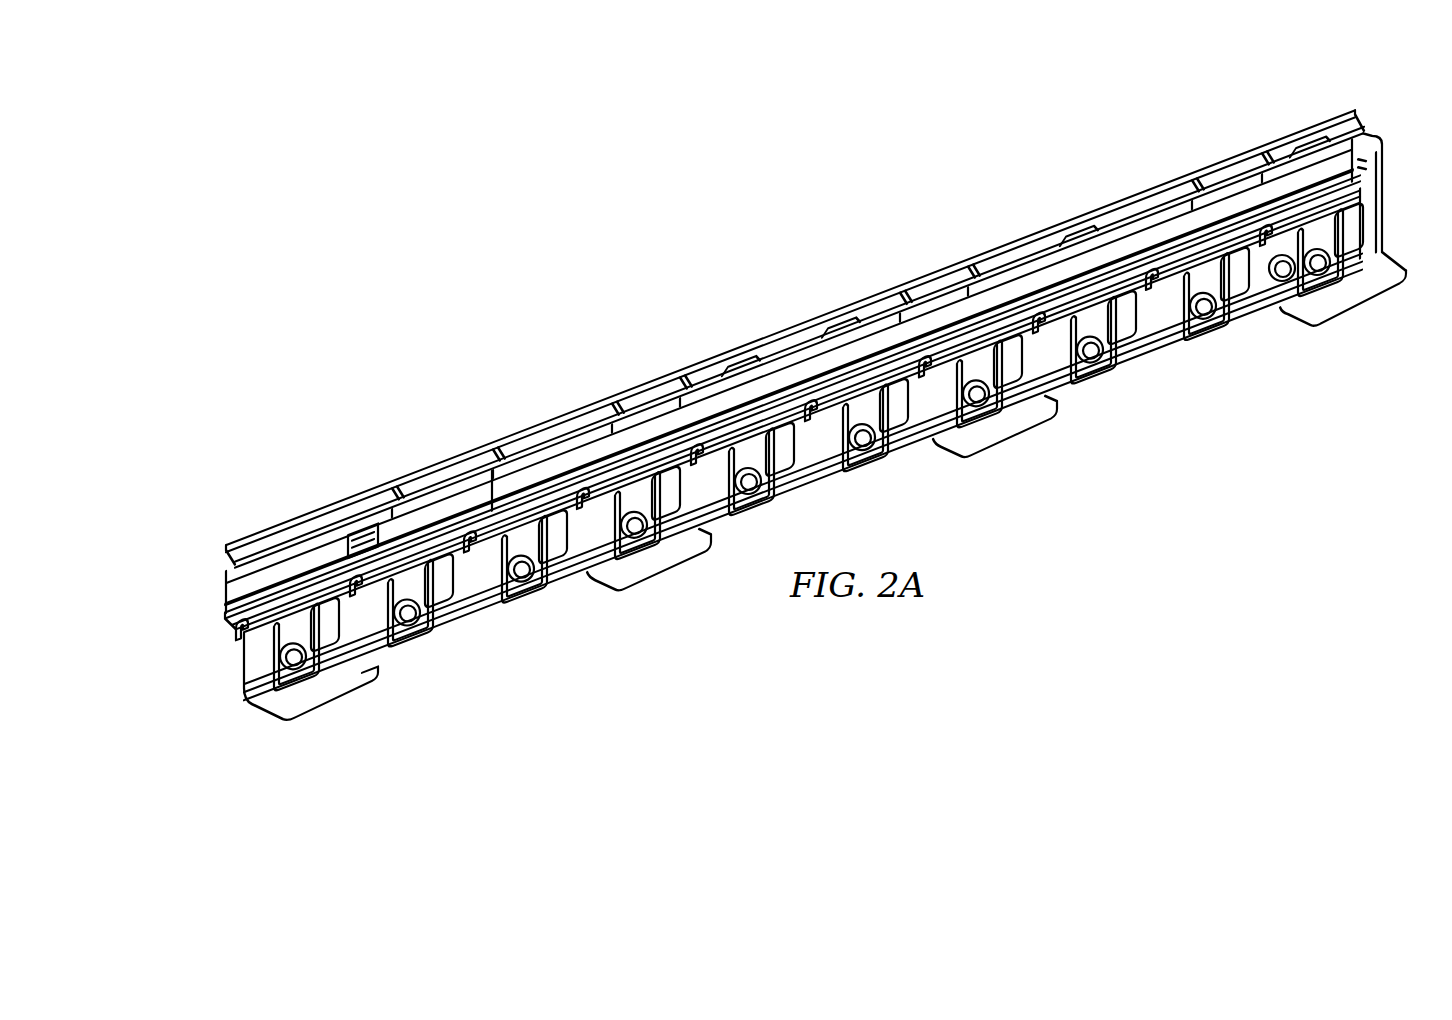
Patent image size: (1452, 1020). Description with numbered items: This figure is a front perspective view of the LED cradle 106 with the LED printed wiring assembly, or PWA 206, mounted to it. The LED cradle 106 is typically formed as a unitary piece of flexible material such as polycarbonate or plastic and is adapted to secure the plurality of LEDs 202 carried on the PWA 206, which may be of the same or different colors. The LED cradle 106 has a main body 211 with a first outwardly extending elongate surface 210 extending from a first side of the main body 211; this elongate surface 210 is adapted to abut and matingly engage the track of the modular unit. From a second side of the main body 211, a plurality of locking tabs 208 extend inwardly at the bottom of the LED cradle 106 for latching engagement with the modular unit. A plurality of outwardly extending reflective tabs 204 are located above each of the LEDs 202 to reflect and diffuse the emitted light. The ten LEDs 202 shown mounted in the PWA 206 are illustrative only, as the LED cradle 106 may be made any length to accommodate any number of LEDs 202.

The LED cradle 106 is at (208, 584).
The LEDs 202 is at (287, 655).
The reflective tabs 204 is at (1172, 247).
The LED Printed Wiring Assembly (PWA) 206 is at (445, 590).
The locking tabs 208 is at (1350, 302).
The first outwardly extending elongate surface 210 is at (1298, 133).
The main body 211 is at (1381, 224).